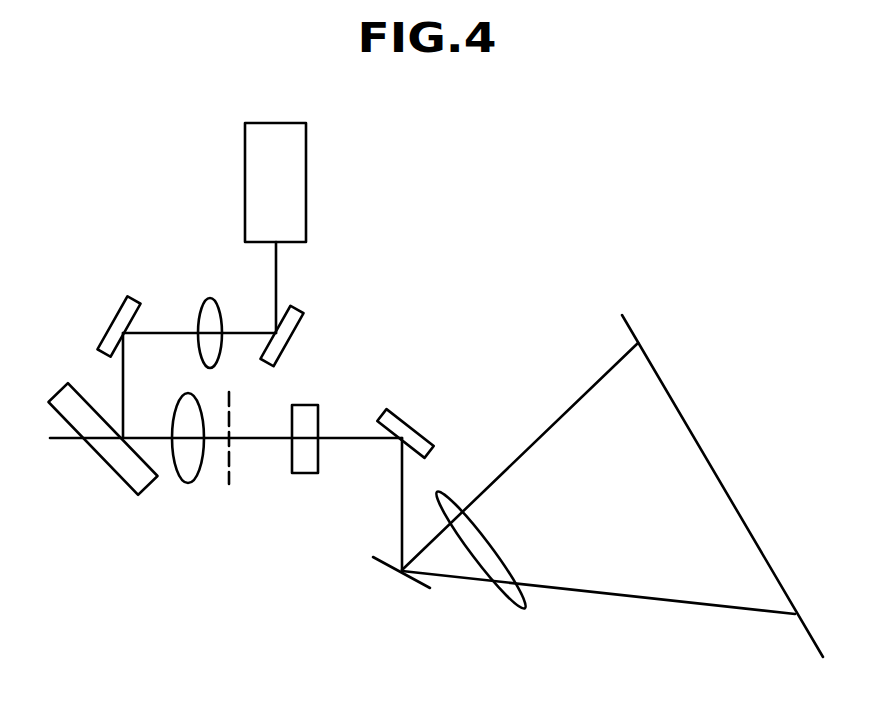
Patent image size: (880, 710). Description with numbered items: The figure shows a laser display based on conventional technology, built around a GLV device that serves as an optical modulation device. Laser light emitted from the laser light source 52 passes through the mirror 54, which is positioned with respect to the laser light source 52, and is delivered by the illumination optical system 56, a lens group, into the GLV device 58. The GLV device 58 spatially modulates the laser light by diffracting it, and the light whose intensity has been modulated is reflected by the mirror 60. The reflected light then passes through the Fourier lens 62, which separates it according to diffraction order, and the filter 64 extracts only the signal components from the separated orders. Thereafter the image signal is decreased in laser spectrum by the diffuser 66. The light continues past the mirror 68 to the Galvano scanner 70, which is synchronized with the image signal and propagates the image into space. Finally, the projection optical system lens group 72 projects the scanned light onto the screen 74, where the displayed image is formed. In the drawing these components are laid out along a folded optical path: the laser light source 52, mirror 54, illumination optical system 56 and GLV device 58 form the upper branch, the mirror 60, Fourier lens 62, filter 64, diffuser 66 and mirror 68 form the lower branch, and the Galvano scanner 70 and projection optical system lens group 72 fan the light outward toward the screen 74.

The laser light source 52 is at (306, 179).
The mirror 54 is at (300, 342).
The illumination optical system 56 is at (208, 298).
The GLV device 58 is at (114, 310).
The mirror 60 is at (108, 465).
The Fourier lens 62 is at (188, 483).
The filter 64 is at (231, 476).
The diffuser 66 is at (301, 473).
The mirror 68 is at (410, 423).
The Galvano scanner 70 is at (412, 580).
The projection optical system lens group 72 is at (525, 608).
The screen 74 is at (682, 415).